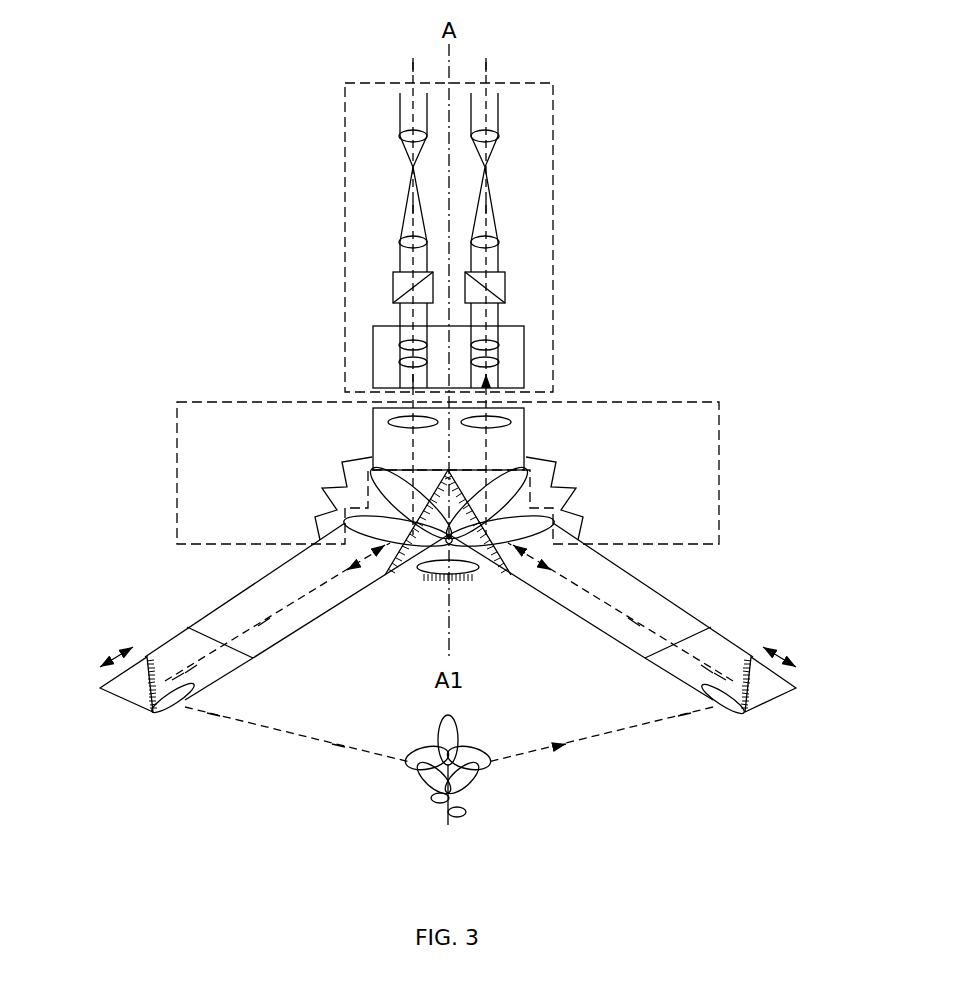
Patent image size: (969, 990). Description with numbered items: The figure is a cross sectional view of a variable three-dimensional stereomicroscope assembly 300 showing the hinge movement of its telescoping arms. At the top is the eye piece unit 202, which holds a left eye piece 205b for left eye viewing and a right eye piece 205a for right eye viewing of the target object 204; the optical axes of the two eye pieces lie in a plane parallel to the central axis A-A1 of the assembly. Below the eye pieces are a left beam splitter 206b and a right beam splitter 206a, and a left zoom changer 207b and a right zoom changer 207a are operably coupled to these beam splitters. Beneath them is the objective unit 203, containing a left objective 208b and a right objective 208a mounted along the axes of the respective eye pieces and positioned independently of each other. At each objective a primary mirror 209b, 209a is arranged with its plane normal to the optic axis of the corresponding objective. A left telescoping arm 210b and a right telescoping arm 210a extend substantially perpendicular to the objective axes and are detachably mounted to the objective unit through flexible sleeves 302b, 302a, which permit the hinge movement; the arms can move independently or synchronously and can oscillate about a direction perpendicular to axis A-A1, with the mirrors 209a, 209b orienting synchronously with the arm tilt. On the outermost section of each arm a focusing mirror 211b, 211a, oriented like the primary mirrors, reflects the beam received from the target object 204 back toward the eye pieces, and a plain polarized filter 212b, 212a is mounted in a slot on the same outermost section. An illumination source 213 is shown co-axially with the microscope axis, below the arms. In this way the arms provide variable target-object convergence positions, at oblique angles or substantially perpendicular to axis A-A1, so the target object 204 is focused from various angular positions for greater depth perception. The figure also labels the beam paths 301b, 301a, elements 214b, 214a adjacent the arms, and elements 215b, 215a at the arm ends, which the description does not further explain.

The eye piece unit 202 is at (345, 165).
The objective unit 203 is at (197, 402).
The target object 204 is at (478, 788).
The left eye piece 205b is at (400, 113).
The right eye piece 205a is at (498, 113).
The left beam splitter 206b is at (393, 288).
The right beam splitter 206a is at (505, 288).
The left zoom changer 207b is at (373, 363).
The right zoom changer 207a is at (524, 363).
The left objective 208b is at (360, 437).
The right objective 208a is at (538, 436).
The primary mirror 209b is at (375, 470).
The primary mirror 209a is at (523, 470).
The left telescoping arm 210b is at (250, 600).
The right telescoping arm 210a is at (646, 602).
The focusing mirror 211b is at (150, 658).
The focusing mirror 211a is at (748, 658).
The plain polarized filter 212b is at (153, 716).
The plain polarized filter 212a is at (741, 716).
The illumination source 213 is at (465, 574).
The illumination beam edge 214b is at (223, 668).
The illumination beam edge 214a is at (675, 668).
The focusing lens 215b is at (177, 704).
The focusing lens 215a is at (720, 705).
The microscope arrangement 300 is at (710, 278).
The illumination beam path 301b is at (284, 530).
The illumination beam path 301a is at (614, 530).
The flexible sleeve 302b is at (315, 510).
The flexible sleeve 302a is at (583, 510).